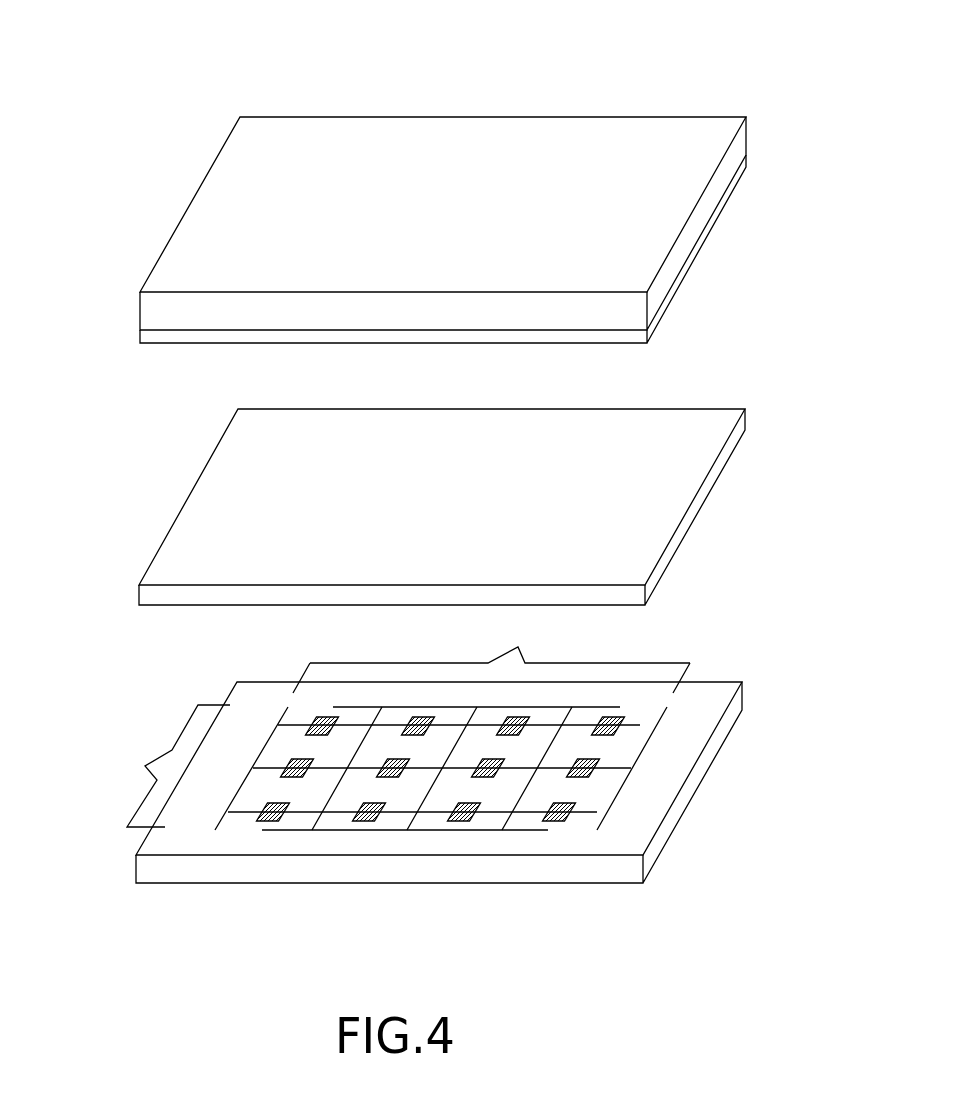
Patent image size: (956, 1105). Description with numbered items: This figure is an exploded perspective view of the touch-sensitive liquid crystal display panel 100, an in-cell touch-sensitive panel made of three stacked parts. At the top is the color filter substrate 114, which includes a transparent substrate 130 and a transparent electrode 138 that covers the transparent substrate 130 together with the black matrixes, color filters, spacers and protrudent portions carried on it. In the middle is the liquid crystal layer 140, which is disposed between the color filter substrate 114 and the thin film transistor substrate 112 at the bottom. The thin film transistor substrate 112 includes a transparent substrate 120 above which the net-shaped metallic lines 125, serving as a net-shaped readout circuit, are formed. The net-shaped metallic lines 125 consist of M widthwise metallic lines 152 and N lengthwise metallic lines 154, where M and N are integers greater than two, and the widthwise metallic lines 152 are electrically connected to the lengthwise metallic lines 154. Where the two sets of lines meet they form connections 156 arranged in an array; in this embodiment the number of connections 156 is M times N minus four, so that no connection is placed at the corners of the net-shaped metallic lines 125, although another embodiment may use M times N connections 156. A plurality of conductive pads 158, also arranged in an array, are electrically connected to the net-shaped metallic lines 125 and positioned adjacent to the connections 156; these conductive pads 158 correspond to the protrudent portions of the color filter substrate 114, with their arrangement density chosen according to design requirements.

The touch-sensitive liquid crystal display panel 100 is at (155, 70).
The color filter substrate 114 is at (192, 198).
The transparent substrate 130 is at (668, 175).
The transparent electrode 138 is at (698, 255).
The liquid crystal layer 140 is at (213, 527).
The thin film transistor substrate 112 is at (231, 692).
The transparent substrate 120 is at (637, 842).
The net-shaped metallic lines 125 is at (247, 822).
The widthwise metallic lines 152 is at (593, 805).
The lengthwise metallic lines 154 is at (412, 822).
The connections 156 is at (320, 813).
The conductive pads 158 is at (278, 822).